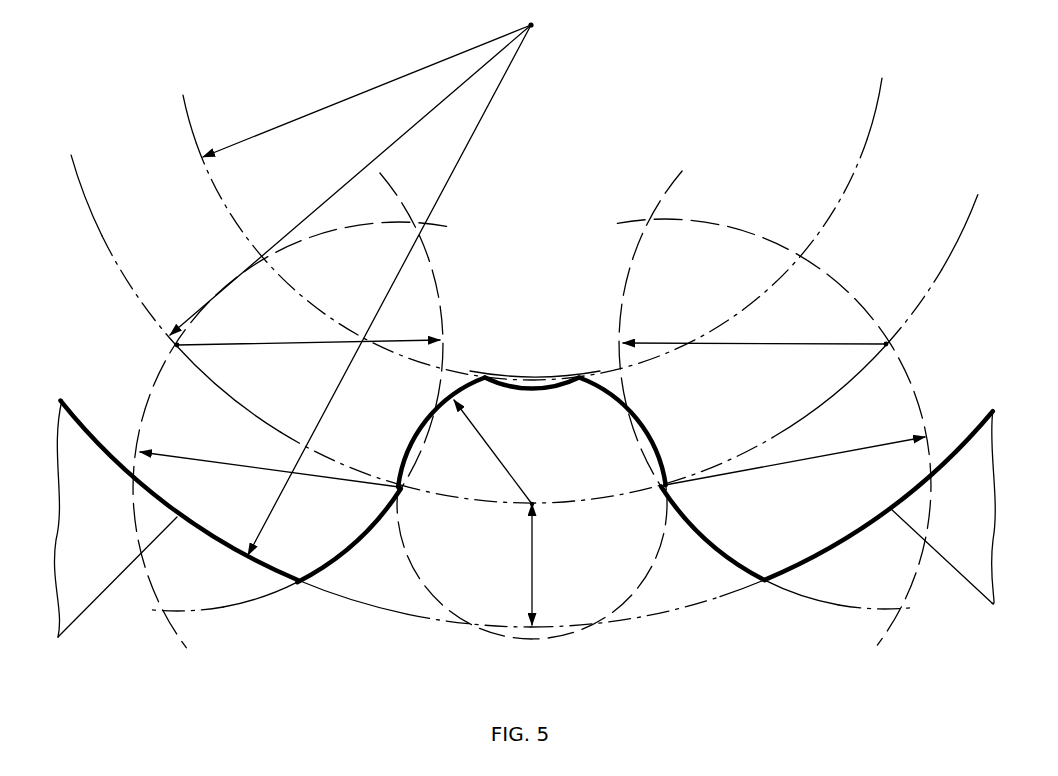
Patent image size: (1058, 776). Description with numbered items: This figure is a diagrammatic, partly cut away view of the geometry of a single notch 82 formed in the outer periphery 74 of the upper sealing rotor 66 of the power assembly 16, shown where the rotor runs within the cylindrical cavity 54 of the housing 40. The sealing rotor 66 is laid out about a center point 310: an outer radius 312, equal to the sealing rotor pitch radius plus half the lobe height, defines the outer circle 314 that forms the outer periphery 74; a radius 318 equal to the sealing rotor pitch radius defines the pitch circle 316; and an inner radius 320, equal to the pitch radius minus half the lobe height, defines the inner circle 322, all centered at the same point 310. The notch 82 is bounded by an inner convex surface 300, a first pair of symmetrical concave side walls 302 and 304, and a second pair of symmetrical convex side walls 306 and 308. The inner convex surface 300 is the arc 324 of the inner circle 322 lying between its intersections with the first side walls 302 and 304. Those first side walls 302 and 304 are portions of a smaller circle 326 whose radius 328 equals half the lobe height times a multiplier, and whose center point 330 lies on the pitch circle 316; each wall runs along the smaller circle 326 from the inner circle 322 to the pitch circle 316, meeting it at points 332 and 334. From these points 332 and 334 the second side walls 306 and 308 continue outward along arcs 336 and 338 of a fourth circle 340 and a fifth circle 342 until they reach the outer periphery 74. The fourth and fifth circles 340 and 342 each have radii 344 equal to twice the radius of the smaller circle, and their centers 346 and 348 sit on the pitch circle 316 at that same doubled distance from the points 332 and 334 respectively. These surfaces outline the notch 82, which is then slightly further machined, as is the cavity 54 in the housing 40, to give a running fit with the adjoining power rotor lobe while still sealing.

The center point 310 is at (534, 24).
The outer radius 312 is at (468, 147).
The outer circle 314 is at (232, 553).
The pitch circle 316 is at (98, 222).
The radius 318 is at (386, 149).
The inner radius 320 is at (247, 140).
The inner circle 322 is at (194, 140).
The arc 324 is at (543, 374).
The smaller circle 326 is at (524, 640).
The radius 328 is at (512, 481).
The center point 330 is at (537, 509).
The point 332 is at (395, 484).
The point 334 is at (668, 483).
The arc 336 is at (360, 522).
The arc 338 is at (705, 537).
The fourth circle 340 is at (443, 286).
The fifth circle 342 is at (625, 290).
The radii 344 is at (258, 345).
The center 346 is at (173, 345).
The center 348 is at (890, 344).
The inner convex surface 300 is at (544, 393).
The concave side wall 302 is at (412, 467).
The concave side wall 304 is at (636, 441).
The convex side wall 306 is at (338, 558).
The convex side wall 308 is at (736, 560).
The outer periphery 74 is at (280, 574).
The notch 82 is at (372, 597).
The cylindrical cavity 54 is at (116, 462).
The housing 40 is at (68, 510).
The upper sealing rotor 66 is at (587, 162).
The power assembly 16 is at (679, 658).